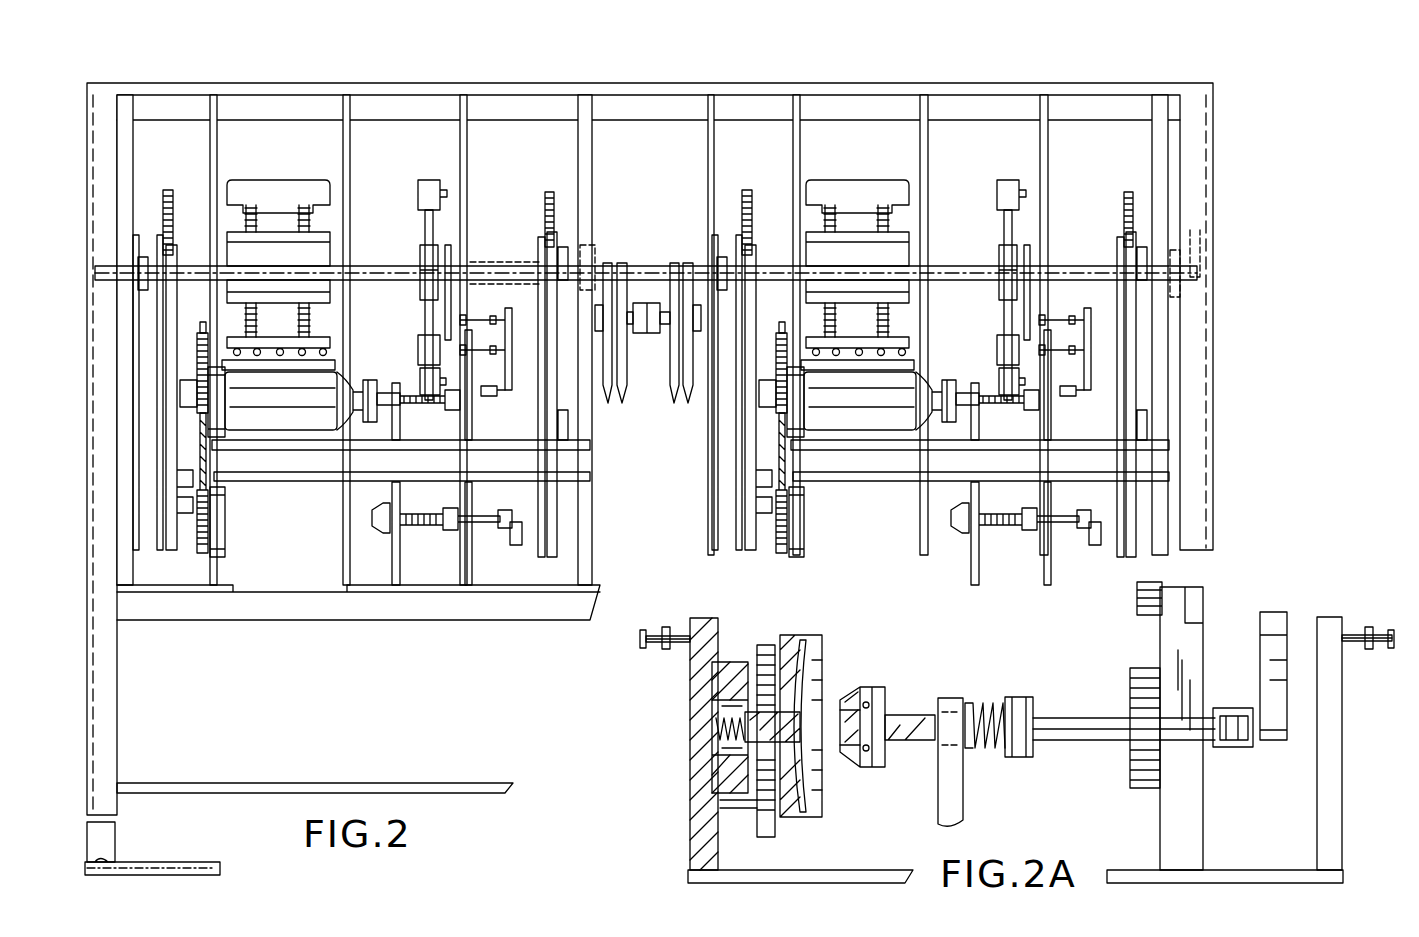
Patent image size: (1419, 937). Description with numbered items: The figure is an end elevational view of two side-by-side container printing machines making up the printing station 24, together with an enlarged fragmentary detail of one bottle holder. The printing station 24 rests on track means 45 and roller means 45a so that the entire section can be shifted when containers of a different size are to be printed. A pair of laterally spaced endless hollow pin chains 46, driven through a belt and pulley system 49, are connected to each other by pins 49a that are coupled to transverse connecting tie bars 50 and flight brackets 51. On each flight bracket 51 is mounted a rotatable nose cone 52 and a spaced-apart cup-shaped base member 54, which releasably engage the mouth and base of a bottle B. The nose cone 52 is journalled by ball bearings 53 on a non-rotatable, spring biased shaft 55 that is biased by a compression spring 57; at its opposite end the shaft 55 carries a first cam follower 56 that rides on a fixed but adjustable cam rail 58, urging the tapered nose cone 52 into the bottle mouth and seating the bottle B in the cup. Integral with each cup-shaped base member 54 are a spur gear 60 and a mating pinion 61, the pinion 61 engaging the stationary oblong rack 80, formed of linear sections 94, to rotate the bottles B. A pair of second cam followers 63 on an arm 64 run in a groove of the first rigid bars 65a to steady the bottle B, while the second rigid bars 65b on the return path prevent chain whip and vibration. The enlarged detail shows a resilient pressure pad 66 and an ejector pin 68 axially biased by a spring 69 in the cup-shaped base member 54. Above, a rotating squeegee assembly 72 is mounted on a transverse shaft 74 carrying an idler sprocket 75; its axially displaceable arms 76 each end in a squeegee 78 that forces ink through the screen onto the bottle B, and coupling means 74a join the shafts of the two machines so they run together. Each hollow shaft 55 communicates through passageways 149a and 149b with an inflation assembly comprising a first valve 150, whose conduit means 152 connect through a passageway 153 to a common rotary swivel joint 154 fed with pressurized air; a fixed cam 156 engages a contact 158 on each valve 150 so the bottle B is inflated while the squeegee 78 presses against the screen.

In FIG. 2, the printing station 24 is at (774, 58).
In FIG. 2, the track means 45 is at (215, 862).
In FIG. 2, the roller means 45a is at (90, 850).
In FIG. 2, the hollow pin chains 46 is at (157, 380).
In FIG. 2A, the hollow pin chains 46 is at (660, 648).
In FIG. 2, the belt and pulley system 49 is at (672, 370).
In FIG. 2A, the pins 49a is at (668, 627).
In FIG. 2, the transverse connecting tie bars 50 is at (376, 450).
In FIG. 2A, the transverse connecting tie bars 50 is at (885, 870).
In FIG. 2A, the flight brackets 51 is at (690, 800).
In FIG. 2, the nose cone 52 is at (372, 405).
In FIG. 2A, the nose cone 52 is at (856, 767).
In FIG. 2A, the ball bearings 53 is at (880, 690).
In FIG. 2, the cup-shaped base member 54 is at (225, 550).
In FIG. 2A, the cup-shaped base member 54 is at (812, 635).
In FIG. 2, the shaft 55 is at (505, 510).
In FIG. 2A, the shaft 55 is at (1046, 718).
In FIG. 2, the first cam follower 56 is at (490, 386).
In FIG. 2A, the first cam follower 56 is at (1245, 742).
In FIG. 2A, the compression spring 57 is at (960, 700).
In FIG. 2, the cam rail 58 is at (508, 318).
In FIG. 2A, the cam rail 58 is at (1280, 612).
In FIG. 2, the spur gear 60 is at (197, 415).
In FIG. 2A, the spur gear 60 is at (766, 645).
In FIG. 2, the pinion 61 is at (217, 437).
In FIG. 2A, the pinion 61 is at (775, 830).
In FIG. 2, the second cam followers 63 is at (400, 405).
In FIG. 2A, the second cam followers 63 is at (1140, 615).
In FIG. 2, the arm 64 is at (472, 412).
In FIG. 2A, the arm 64 is at (1203, 630).
In FIG. 2, the first rigid bars 65a is at (467, 190).
In FIG. 2, the second rigid bars 65b is at (468, 620).
In FIG. 2A, the resilient pressure pad 66 is at (806, 665).
In FIG. 2A, the ejector pin 68 is at (790, 722).
In FIG. 2A, the spring 69 is at (716, 728).
In FIG. 2, the rotating squeegee assembly 72 is at (263, 170).
In FIG. 2, the transverse shaft 74 is at (392, 266).
In FIG. 2, the coupling means 74a is at (647, 303).
In FIG. 2, the idler sprocket 75 is at (172, 190).
In FIG. 2, the arms 76 is at (310, 222).
In FIG. 2, the squeegee 78 is at (283, 180).
In FIG. 2, the oblong rack 80 is at (184, 329).
In FIG. 2, the linear sections 94 is at (203, 322).
In FIG. 2A, the passageway 149a is at (912, 715).
In FIG. 2A, the passageway 149b is at (1024, 697).
In FIG. 2, the first valve 150 is at (418, 345).
In FIG. 2, the conduit means 152 is at (425, 316).
In FIG. 2, the passageway 153 is at (485, 266).
In FIG. 2, the rotary swivel joint 154 is at (596, 248).
In FIG. 2, the fixed cam 156 is at (451, 262).
In FIG. 2, the contact 158 is at (447, 190).
In FIG. 2, the bottles B is at (290, 400).